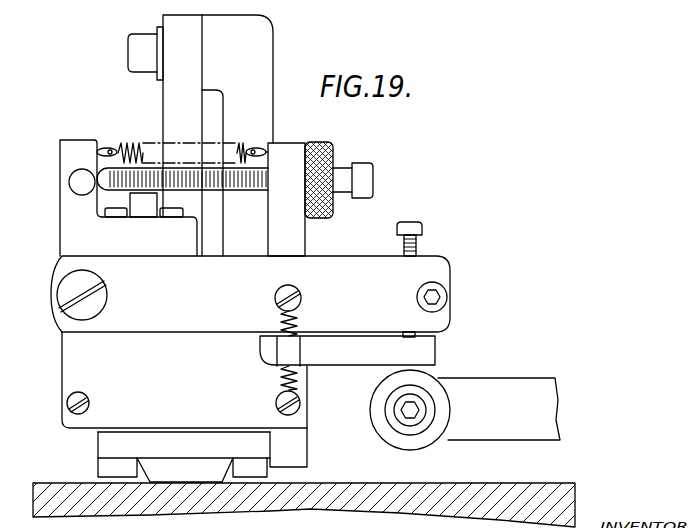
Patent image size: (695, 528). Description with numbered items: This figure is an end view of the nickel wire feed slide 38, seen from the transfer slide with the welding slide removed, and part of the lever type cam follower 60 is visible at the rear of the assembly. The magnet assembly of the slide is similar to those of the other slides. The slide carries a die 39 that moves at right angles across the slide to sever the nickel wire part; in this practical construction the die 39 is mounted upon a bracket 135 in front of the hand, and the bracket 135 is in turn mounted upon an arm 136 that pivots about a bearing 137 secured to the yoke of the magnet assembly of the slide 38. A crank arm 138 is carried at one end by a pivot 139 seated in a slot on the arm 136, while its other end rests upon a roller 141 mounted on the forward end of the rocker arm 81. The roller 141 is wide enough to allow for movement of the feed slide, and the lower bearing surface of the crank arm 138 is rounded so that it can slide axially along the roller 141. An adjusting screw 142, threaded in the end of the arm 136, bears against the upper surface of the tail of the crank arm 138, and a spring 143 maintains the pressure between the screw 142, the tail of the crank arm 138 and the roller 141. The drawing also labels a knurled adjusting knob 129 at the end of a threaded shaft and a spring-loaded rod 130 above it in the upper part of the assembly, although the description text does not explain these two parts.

The nickel wire slide 38 is at (305, 402).
The die 39 is at (83, 178).
The lever type cam follower 60 is at (175, 85).
The rocker arm 81 is at (478, 393).
The knurled adjusting knob 129 is at (345, 181).
The spring rod 130 is at (131, 146).
The bracket 135 is at (133, 243).
The arm 136 is at (170, 308).
The bearing 137 is at (90, 318).
The crank arm 138 is at (363, 350).
The pivot 139 is at (301, 298).
The roller 141 is at (427, 447).
The adjusting screw 142 is at (413, 249).
The spring 143 is at (282, 322).